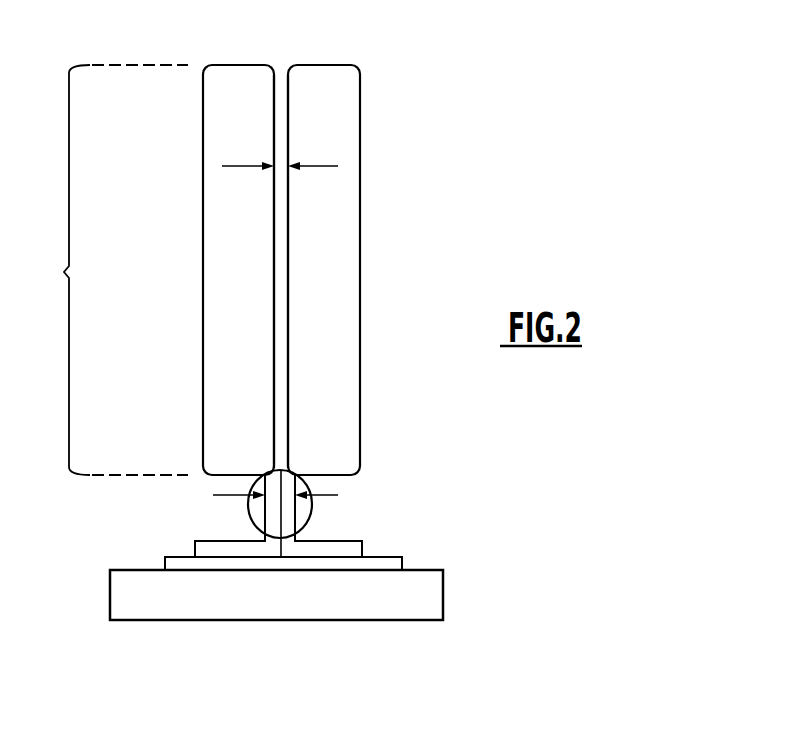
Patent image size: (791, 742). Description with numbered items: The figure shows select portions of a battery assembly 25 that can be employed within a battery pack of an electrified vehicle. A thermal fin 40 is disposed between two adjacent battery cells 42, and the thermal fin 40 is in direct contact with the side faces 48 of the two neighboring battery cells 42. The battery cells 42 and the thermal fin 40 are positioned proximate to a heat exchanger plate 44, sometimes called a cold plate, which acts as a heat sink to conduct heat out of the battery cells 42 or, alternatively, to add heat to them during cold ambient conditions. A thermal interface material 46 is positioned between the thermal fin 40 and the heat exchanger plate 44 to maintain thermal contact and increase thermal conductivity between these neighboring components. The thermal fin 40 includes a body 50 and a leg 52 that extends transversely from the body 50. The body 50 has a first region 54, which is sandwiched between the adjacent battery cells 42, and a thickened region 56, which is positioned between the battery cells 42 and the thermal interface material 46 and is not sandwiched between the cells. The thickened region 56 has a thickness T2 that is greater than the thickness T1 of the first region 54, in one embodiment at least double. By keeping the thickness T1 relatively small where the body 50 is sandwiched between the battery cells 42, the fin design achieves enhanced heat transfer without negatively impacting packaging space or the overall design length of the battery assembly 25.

The battery assembly 25 is at (404, 54).
The first region 54 is at (110, 270).
The battery cells 42 is at (223, 262).
The side faces 48 is at (273, 319).
The thermal fin 40 is at (292, 392).
The body 50 is at (283, 245).
The thickness T1 is at (338, 166).
The thickened region 56 is at (309, 483).
The thickness T2 is at (227, 496).
The leg 52 is at (327, 553).
The thermal interface material 46 is at (377, 565).
The heat exchanger plate 44 is at (255, 600).